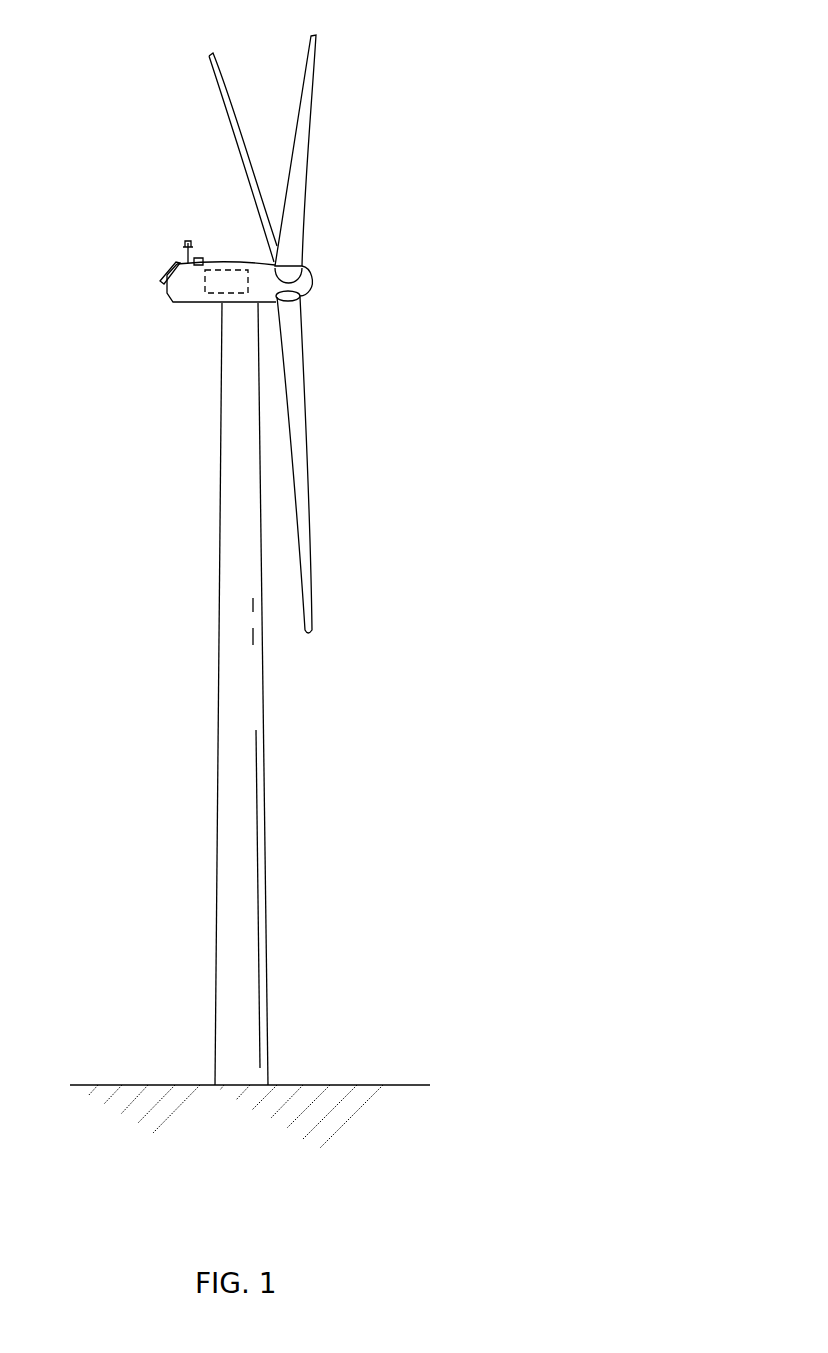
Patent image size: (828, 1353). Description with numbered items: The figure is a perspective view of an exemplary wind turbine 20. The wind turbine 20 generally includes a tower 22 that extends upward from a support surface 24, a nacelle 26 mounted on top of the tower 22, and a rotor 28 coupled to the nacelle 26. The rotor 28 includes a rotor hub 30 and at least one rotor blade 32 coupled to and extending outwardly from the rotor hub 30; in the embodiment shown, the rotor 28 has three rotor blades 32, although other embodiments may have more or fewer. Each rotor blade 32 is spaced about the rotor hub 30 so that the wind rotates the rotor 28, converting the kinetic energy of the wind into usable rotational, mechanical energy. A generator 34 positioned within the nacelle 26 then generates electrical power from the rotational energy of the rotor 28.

The wind turbine 20 is at (592, 96).
The tower 22 is at (230, 803).
The support surface 24 is at (150, 1085).
The nacelle 26 is at (200, 302).
The rotor 28 is at (320, 258).
The rotor hub 30 is at (305, 283).
The rotor blade 32 is at (307, 72).
The generator 34 is at (223, 270).